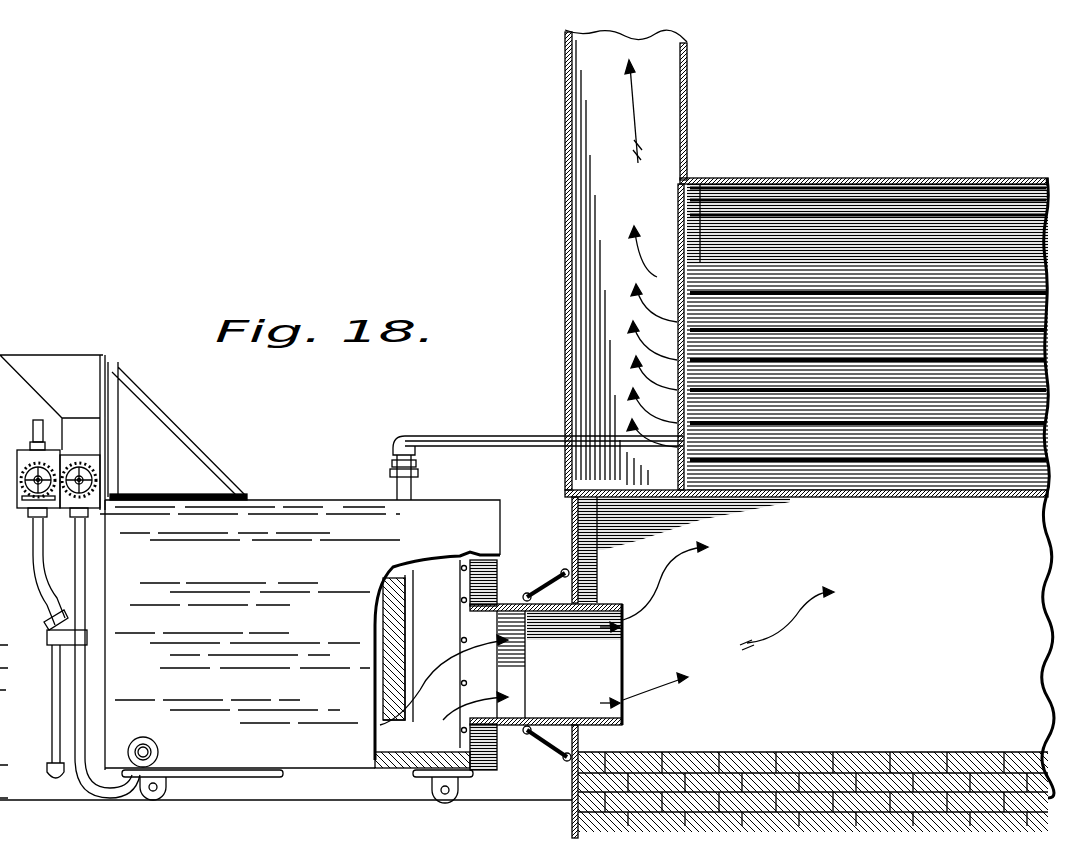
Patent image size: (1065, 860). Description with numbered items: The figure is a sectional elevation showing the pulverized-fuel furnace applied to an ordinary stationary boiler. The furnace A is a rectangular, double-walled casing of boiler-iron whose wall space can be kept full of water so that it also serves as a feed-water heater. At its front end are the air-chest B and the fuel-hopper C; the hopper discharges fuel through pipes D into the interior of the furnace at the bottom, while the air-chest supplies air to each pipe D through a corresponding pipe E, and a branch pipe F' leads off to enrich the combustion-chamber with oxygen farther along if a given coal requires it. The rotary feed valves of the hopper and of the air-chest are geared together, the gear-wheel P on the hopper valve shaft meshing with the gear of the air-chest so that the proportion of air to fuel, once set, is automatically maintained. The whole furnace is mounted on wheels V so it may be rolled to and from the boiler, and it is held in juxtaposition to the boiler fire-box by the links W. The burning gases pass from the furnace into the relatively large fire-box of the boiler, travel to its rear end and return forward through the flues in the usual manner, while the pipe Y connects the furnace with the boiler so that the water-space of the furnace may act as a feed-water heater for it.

The furnace A is at (300, 621).
The air-chest B is at (17, 478).
The fuel-hopper C is at (52, 432).
The pipes D is at (85, 566).
The pipes E is at (34, 583).
The pipe F' is at (39, 711).
The gear-wheel P is at (100, 477).
The wheels V is at (158, 800).
The links W is at (554, 585).
The pipe Y is at (473, 439).